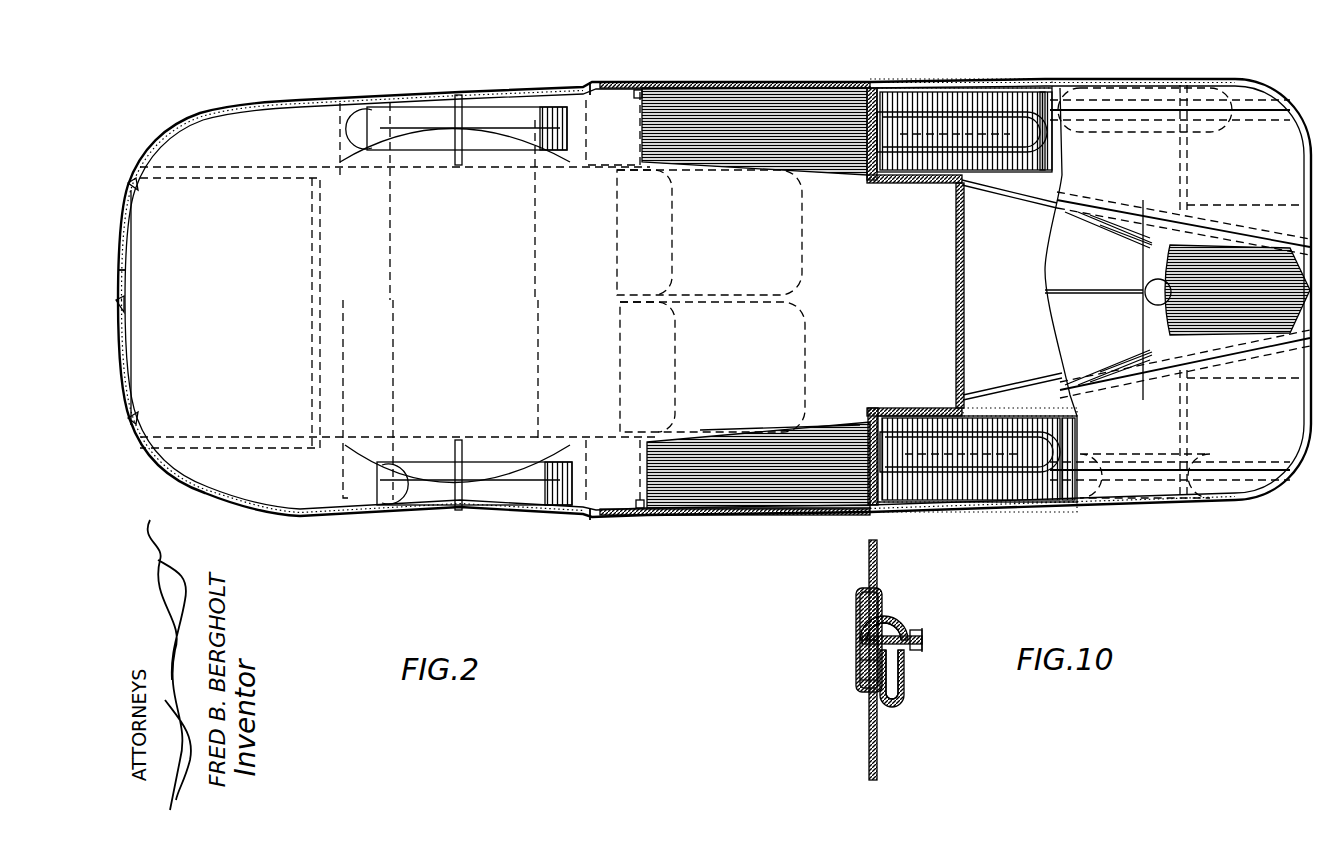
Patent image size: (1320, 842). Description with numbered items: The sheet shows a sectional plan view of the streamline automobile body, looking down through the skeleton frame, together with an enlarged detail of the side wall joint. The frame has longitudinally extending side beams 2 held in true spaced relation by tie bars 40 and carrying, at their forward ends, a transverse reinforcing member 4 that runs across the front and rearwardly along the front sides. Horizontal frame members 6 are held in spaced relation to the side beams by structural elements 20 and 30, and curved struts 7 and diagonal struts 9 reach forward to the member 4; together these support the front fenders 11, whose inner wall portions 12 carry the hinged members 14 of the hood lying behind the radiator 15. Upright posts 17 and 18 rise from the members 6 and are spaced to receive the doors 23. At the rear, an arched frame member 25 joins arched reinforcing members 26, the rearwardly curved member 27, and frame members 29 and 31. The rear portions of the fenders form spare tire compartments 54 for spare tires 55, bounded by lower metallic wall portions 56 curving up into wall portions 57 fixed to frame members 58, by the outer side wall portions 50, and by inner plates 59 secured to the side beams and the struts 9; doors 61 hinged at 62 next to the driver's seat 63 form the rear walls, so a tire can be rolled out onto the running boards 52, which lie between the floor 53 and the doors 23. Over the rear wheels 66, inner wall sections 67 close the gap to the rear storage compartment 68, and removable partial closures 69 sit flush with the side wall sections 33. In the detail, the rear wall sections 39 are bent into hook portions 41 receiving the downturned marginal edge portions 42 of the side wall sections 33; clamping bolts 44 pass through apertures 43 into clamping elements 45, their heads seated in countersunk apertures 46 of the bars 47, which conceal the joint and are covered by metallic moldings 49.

In FIG. 2, the side beams 2 is at (735, 165).
In FIG. 2, the transverse reinforcing member 4 is at (1306, 390).
In FIG. 2, the horizontal frame members 6 is at (775, 102).
In FIG. 2, the curved struts 7 is at (1127, 108).
In FIG. 2, the diagonal struts 9 is at (1123, 195).
In FIG. 2, the front fenders 11 is at (1148, 125).
In FIG. 2, the inner wall portions 12 is at (1087, 125).
In FIG. 2, the hinged members 14 is at (1050, 272).
In FIG. 2, the radiator 15 is at (1165, 265).
In FIG. 2, the upright posts 17 is at (887, 100).
In FIG. 2, the upright posts 18 is at (635, 95).
In FIG. 2, the structural elements 20 is at (883, 110).
In FIG. 2, the doors 23 is at (718, 84).
In FIG. 2, the arched frame member 25 is at (458, 100).
In FIG. 2, the arched reinforcing members 26 is at (405, 115).
In FIG. 2, the curved member 27 is at (128, 284).
In FIG. 2, the frame member 29 is at (136, 185).
In FIG. 2, the structural elements 30 is at (640, 130).
In FIG. 2, the frame member 31 is at (125, 305).
In FIG. 2, the side wall sections 33 is at (596, 86).
In FIG. 10, the side wall sections 33 is at (872, 745).
In FIG. 10, the rear wall sections 39 is at (868, 553).
In FIG. 2, the tie bars 40 is at (310, 290).
In FIG. 10, the hook portions 41 is at (893, 700).
In FIG. 10, the marginal edge portions 42 is at (905, 690).
In FIG. 10, the apertures 43 is at (890, 620).
In FIG. 10, the clamping bolts 44 is at (925, 640).
In FIG. 10, the clamping elements 45 is at (905, 625).
In FIG. 10, the countersunk apertures 46 is at (858, 660).
In FIG. 10, the bars 47 is at (863, 680).
In FIG. 10, the metallic moldings 49 is at (855, 605).
In FIG. 2, the outer side wall portions 50 is at (930, 80).
In FIG. 2, the running boards 52 is at (808, 105).
In FIG. 2, the floor 53 is at (815, 420).
In FIG. 2, the spare tire compartments 54 is at (976, 105).
In FIG. 2, the spare tires 55 is at (892, 160).
In FIG. 2, the lower metallic wall portions 56 is at (906, 85).
In FIG. 2, the wall portions 57 is at (1040, 92).
In FIG. 2, the frame members 58 is at (1188, 150).
In FIG. 2, the plates 59 is at (1002, 185).
In FIG. 2, the doors 61 is at (865, 140).
In FIG. 2, the hinges 62 is at (866, 176).
In FIG. 2, the driver's seat 63 is at (805, 272).
In FIG. 2, the rear wheels 66 is at (446, 140).
In FIG. 2, the inner wall sections 67 is at (492, 130).
In FIG. 2, the storage compartment 68 is at (210, 150).
In FIG. 2, the partial closures 69 is at (490, 93).